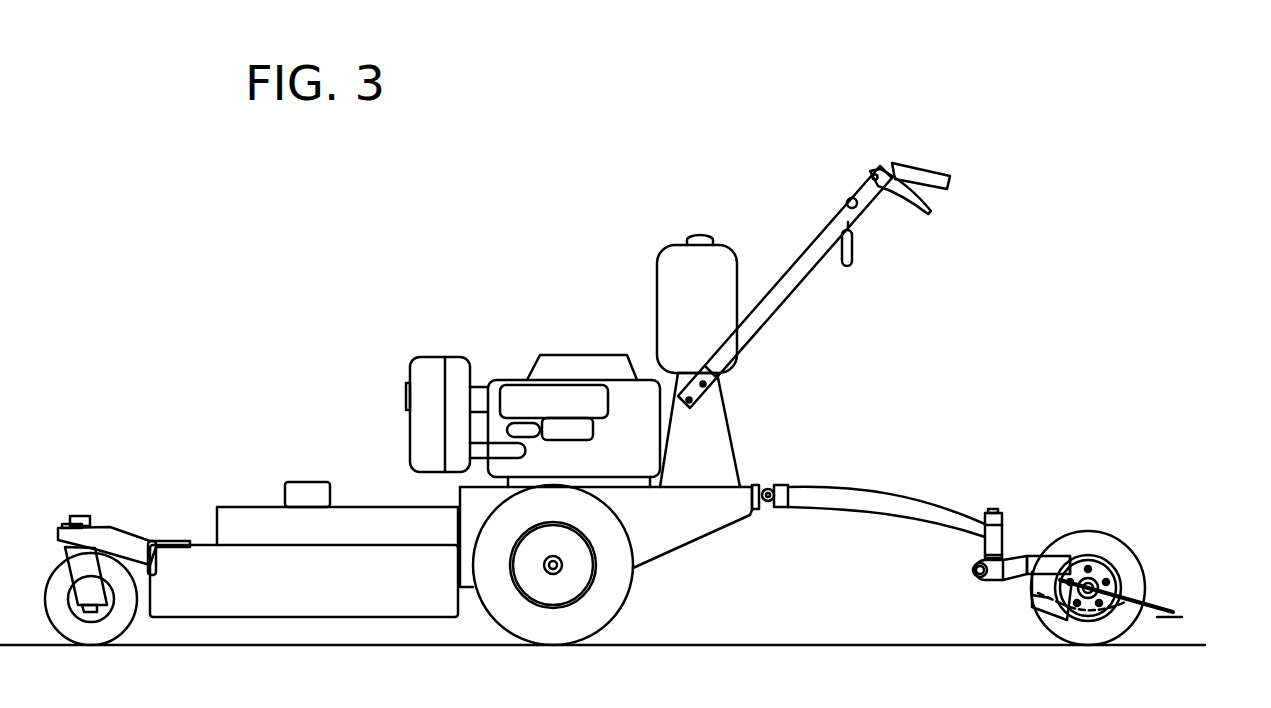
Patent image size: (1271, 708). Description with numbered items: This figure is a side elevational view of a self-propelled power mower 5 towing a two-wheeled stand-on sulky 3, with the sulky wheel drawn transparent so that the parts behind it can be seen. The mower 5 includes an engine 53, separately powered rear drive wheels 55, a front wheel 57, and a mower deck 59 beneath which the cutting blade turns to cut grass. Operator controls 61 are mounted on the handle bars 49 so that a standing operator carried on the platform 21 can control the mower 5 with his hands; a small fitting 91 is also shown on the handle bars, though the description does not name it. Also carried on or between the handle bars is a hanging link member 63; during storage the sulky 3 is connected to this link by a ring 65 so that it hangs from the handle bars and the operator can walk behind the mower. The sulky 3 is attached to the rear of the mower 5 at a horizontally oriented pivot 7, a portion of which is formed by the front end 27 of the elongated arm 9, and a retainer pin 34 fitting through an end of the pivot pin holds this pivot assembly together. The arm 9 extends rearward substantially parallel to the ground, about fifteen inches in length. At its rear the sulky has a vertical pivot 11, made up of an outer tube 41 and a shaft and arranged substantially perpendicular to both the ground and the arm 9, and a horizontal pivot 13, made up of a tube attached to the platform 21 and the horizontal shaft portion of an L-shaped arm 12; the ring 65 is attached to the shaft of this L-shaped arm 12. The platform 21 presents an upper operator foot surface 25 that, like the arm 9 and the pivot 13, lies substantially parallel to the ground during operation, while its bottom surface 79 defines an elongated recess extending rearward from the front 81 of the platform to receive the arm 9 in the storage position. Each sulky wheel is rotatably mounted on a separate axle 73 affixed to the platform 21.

The stand-on sulky 3 is at (1035, 440).
The power mower 5 is at (558, 227).
The horizontally oriented pivot 7 is at (766, 517).
The elongated arm 9 is at (820, 497).
The vertical pivot 11 is at (978, 582).
The L-shaped arm 12 is at (1015, 522).
The horizontal pivot 13 is at (1013, 567).
The platform 21 is at (1130, 597).
The top platform surface 25 is at (1160, 617).
The front end 27 is at (783, 468).
The retainer pin 34 is at (768, 487).
The outer tube 41 is at (980, 517).
The handle bars 49 is at (883, 168).
The engine 53 is at (533, 398).
The rear drive wheels 55 is at (570, 630).
The front wheel 57 is at (87, 633).
The mower deck 59 is at (367, 592).
The operator controls 61 is at (897, 190).
The hanging link member 63 is at (853, 260).
The ring 65 is at (980, 563).
The axle 73 is at (562, 568).
The bottom surface of platform 79 is at (1032, 612).
The front of the platform 81 is at (1032, 595).
The pin 91 is at (848, 202).